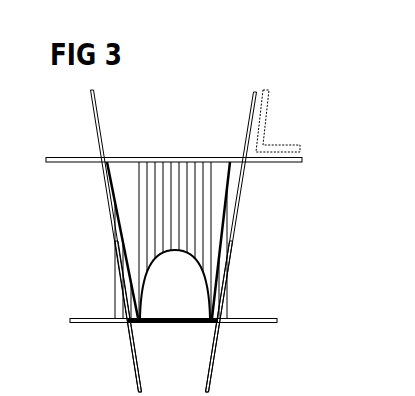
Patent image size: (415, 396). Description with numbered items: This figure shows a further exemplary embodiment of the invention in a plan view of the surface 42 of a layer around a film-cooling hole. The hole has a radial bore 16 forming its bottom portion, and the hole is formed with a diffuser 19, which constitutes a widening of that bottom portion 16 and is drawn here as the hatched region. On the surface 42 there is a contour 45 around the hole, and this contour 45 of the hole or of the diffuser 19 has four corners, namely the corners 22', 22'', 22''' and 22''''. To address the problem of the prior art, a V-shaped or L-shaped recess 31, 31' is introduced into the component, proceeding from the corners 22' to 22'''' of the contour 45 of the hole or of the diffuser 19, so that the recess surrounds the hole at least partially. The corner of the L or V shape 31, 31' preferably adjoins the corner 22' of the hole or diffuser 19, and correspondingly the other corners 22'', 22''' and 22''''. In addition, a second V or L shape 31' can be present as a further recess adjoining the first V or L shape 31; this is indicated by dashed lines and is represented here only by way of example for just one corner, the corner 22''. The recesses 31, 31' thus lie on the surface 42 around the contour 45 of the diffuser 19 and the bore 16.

The corner 22' is at (116, 241).
The corner 22'' is at (231, 242).
The corner 22''' is at (118, 316).
The corner 22'''' is at (236, 316).
The recess 31 is at (203, 151).
The recess 31' is at (294, 121).
The diffuser 19 is at (218, 212).
The surface 42 is at (305, 248).
The contour 45 is at (225, 287).
The radial bore 16 is at (200, 312).